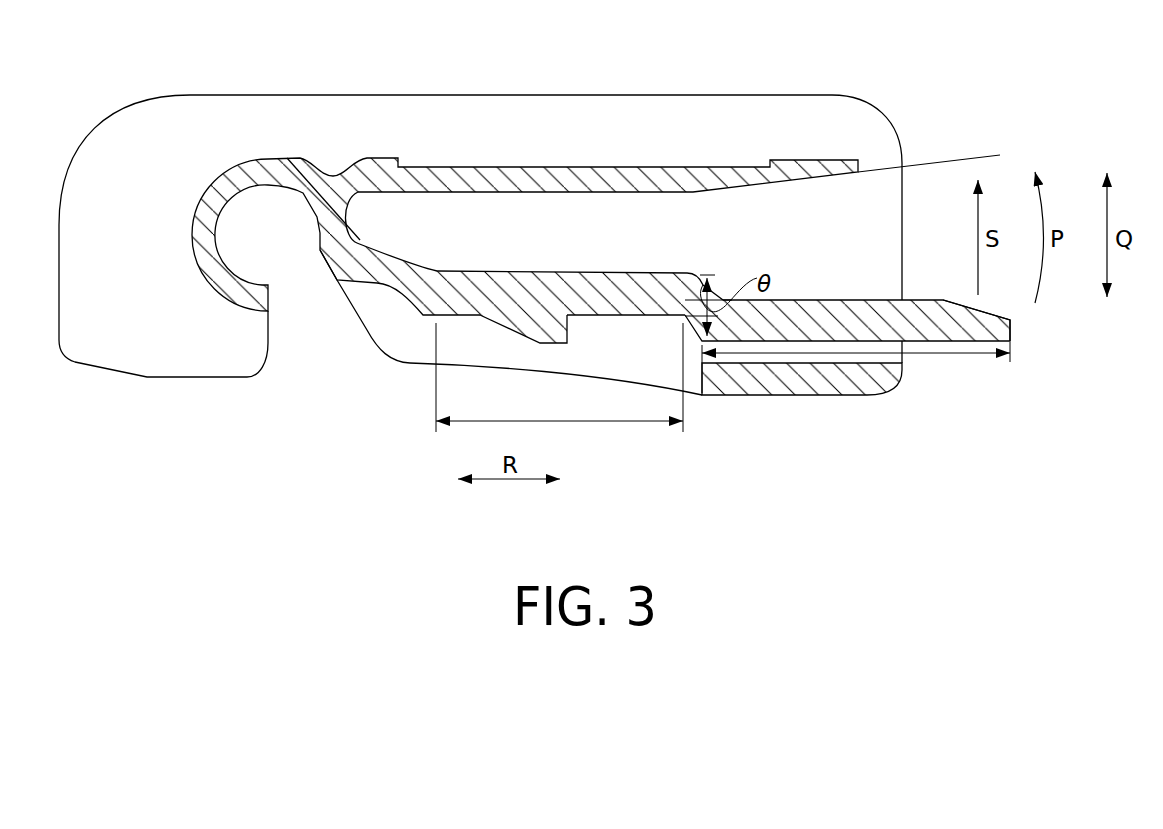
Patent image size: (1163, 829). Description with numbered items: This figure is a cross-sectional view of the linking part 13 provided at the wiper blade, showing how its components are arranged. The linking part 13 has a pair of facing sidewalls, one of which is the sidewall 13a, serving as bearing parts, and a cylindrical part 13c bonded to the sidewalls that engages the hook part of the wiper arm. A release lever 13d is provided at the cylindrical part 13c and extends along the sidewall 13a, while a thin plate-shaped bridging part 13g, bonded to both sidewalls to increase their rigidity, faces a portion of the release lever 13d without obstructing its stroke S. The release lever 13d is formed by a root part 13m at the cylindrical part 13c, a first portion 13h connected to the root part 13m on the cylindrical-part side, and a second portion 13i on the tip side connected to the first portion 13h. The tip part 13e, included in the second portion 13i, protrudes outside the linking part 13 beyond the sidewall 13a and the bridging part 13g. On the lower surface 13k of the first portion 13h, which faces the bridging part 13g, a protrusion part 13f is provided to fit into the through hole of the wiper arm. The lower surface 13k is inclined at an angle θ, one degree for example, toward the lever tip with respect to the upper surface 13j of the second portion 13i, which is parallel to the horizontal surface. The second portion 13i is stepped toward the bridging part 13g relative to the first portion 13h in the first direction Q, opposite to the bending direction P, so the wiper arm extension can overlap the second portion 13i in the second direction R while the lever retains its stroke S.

The linking part 13 is at (792, 95).
The sidewall 13a is at (876, 146).
The cylindrical part 13c is at (213, 180).
The release lever 13d is at (700, 277).
The tip part 13e is at (1000, 307).
The protrusion part 13f is at (540, 342).
The bridging part 13g is at (788, 396).
The first portion 13h is at (559, 377).
The second portion 13i is at (856, 367).
The upper surface 13j is at (825, 300).
The lower surface 13k is at (587, 317).
The root part 13m is at (395, 245).